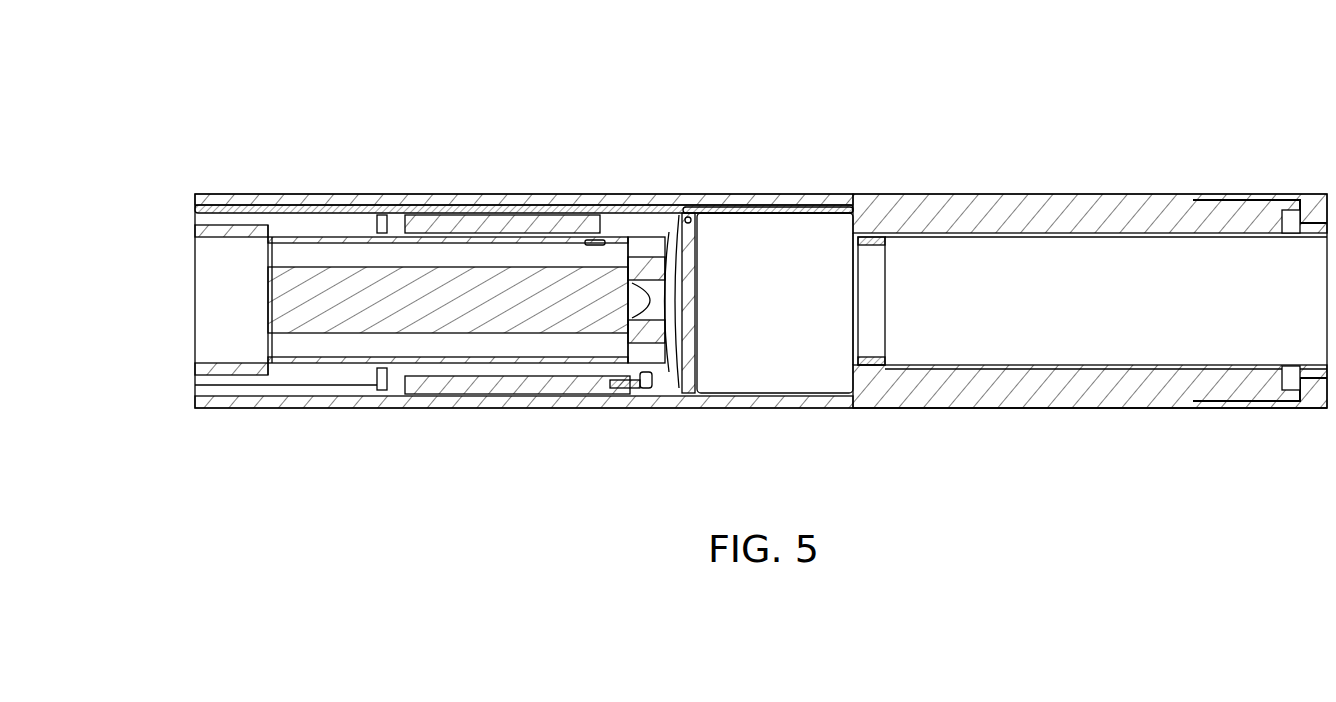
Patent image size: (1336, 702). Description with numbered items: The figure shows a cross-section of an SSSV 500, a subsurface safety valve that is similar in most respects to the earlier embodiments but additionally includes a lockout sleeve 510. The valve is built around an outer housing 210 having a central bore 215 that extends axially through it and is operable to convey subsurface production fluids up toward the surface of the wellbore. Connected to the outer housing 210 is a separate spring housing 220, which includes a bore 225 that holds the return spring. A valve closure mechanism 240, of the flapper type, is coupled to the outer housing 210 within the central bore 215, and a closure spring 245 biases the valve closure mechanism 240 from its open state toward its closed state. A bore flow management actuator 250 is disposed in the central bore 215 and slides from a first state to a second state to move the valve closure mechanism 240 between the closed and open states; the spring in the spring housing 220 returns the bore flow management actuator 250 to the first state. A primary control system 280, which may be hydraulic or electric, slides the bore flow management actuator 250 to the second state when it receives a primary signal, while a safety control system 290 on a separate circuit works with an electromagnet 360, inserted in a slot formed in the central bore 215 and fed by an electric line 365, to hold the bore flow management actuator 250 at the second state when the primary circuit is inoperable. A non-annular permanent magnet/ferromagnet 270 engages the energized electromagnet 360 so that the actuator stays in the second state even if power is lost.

The SSSV 500 is at (172, 81).
The outer housing 210 is at (1126, 194).
The central bore 215 is at (1128, 312).
The spring housing 220 is at (270, 194).
The bore 225 is at (282, 386).
The valve closure mechanism 240 is at (688, 392).
The closure spring 245 is at (692, 208).
The bore flow management actuator 250 is at (432, 236).
The permanent magnet/ferromagnet 270 is at (600, 238).
The primary control system 280 is at (182, 388).
The safety control system 290 is at (182, 211).
The electromagnet 360 is at (870, 236).
The electric line 365 is at (802, 213).
The lockout sleeve 510 is at (978, 366).